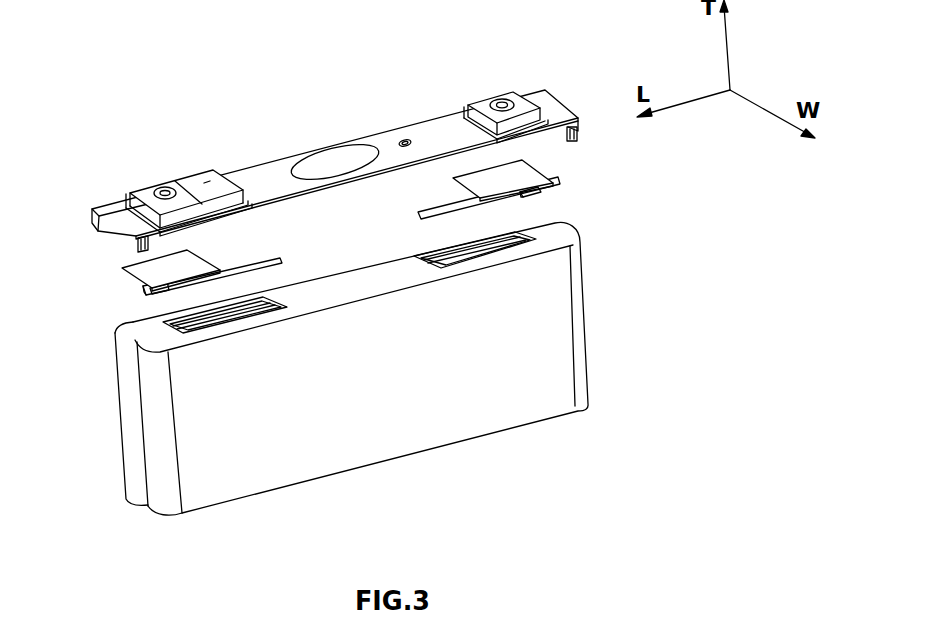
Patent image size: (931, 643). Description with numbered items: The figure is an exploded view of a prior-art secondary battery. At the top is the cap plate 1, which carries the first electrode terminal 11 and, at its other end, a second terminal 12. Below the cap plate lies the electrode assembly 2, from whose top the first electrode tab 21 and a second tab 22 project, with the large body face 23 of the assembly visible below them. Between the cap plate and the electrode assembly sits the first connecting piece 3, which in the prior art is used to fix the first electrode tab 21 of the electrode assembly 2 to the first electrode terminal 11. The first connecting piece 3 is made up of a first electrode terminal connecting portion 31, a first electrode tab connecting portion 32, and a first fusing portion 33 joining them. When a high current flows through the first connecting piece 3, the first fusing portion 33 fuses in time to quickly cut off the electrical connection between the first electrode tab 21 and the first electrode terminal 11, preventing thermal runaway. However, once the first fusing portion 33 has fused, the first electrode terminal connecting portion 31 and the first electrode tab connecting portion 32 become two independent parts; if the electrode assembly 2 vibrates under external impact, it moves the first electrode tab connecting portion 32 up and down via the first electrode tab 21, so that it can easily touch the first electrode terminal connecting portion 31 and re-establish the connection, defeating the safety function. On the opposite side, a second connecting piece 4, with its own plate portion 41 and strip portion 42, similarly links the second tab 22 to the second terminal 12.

The cap plate 1 is at (331, 155).
The first electrode terminal 11 is at (508, 101).
The second electrode terminal 12 is at (155, 192).
The electrode assembly 2 is at (392, 368).
The first electrode tab 21 is at (457, 252).
The second tab slot 22 is at (222, 313).
The cell housing side face 23 is at (498, 408).
The first connecting piece 3 is at (530, 187).
The first electrode terminal connecting portion 31 is at (532, 177).
The first electrode tab connecting portion 32 is at (487, 205).
The first fusing portion 33 is at (540, 194).
The second connecting member 4 is at (149, 273).
The connecting plate 41 is at (147, 270).
The connecting strip 42 is at (160, 290).